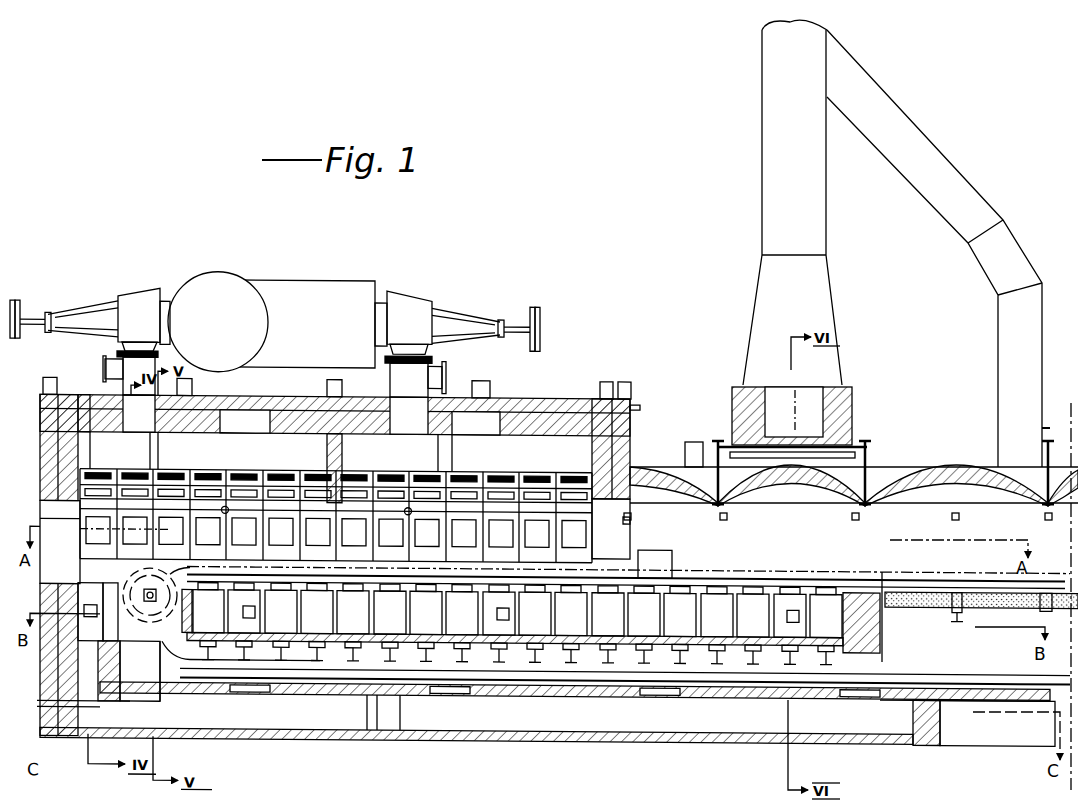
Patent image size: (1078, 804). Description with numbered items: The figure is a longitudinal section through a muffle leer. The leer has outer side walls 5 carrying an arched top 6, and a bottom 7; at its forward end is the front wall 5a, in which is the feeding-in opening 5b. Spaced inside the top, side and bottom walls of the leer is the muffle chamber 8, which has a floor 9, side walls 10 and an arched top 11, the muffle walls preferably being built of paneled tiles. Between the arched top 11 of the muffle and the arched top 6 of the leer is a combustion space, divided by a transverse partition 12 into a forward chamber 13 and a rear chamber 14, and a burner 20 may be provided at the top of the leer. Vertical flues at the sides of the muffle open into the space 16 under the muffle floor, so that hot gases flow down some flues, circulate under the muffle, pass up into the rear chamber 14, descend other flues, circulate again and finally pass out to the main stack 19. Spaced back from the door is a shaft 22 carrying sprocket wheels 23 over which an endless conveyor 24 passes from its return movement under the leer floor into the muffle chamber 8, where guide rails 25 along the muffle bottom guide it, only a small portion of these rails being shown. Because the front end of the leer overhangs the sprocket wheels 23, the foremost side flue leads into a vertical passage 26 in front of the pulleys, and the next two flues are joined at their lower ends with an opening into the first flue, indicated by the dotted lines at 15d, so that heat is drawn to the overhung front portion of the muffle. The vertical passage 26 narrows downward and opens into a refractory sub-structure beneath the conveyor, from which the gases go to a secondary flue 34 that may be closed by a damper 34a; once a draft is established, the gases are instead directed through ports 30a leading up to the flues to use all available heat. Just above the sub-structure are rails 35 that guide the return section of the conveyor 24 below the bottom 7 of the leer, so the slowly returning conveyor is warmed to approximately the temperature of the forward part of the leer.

The outer side walls 5 is at (106, 432).
The front wall 5a is at (42, 463).
The feeding-in opening 5b is at (46, 512).
The arched top 6 is at (298, 405).
The bottom 7 is at (323, 738).
The muffle chamber 8 is at (336, 516).
The floor 9 is at (590, 582).
The side walls 10 is at (90, 527).
The arched top 11 is at (221, 472).
The transverse partition 12 is at (342, 456).
The forward chamber 13 is at (179, 450).
The rear chamber 14 is at (466, 453).
The opening 15d is at (92, 545).
The space 16 is at (531, 623).
The main stack 19 is at (869, 263).
The burner 20 is at (275, 334).
The shaft 22 is at (143, 590).
The sprocket wheels 23 is at (154, 612).
The endless conveyor 24 is at (184, 560).
The guide rails 25 is at (707, 572).
The vertical passage 26 is at (83, 620).
The ports 30a is at (390, 707).
The secondary flue 34 is at (1007, 375).
The damper 34a is at (1045, 429).
The rails 35 is at (552, 676).